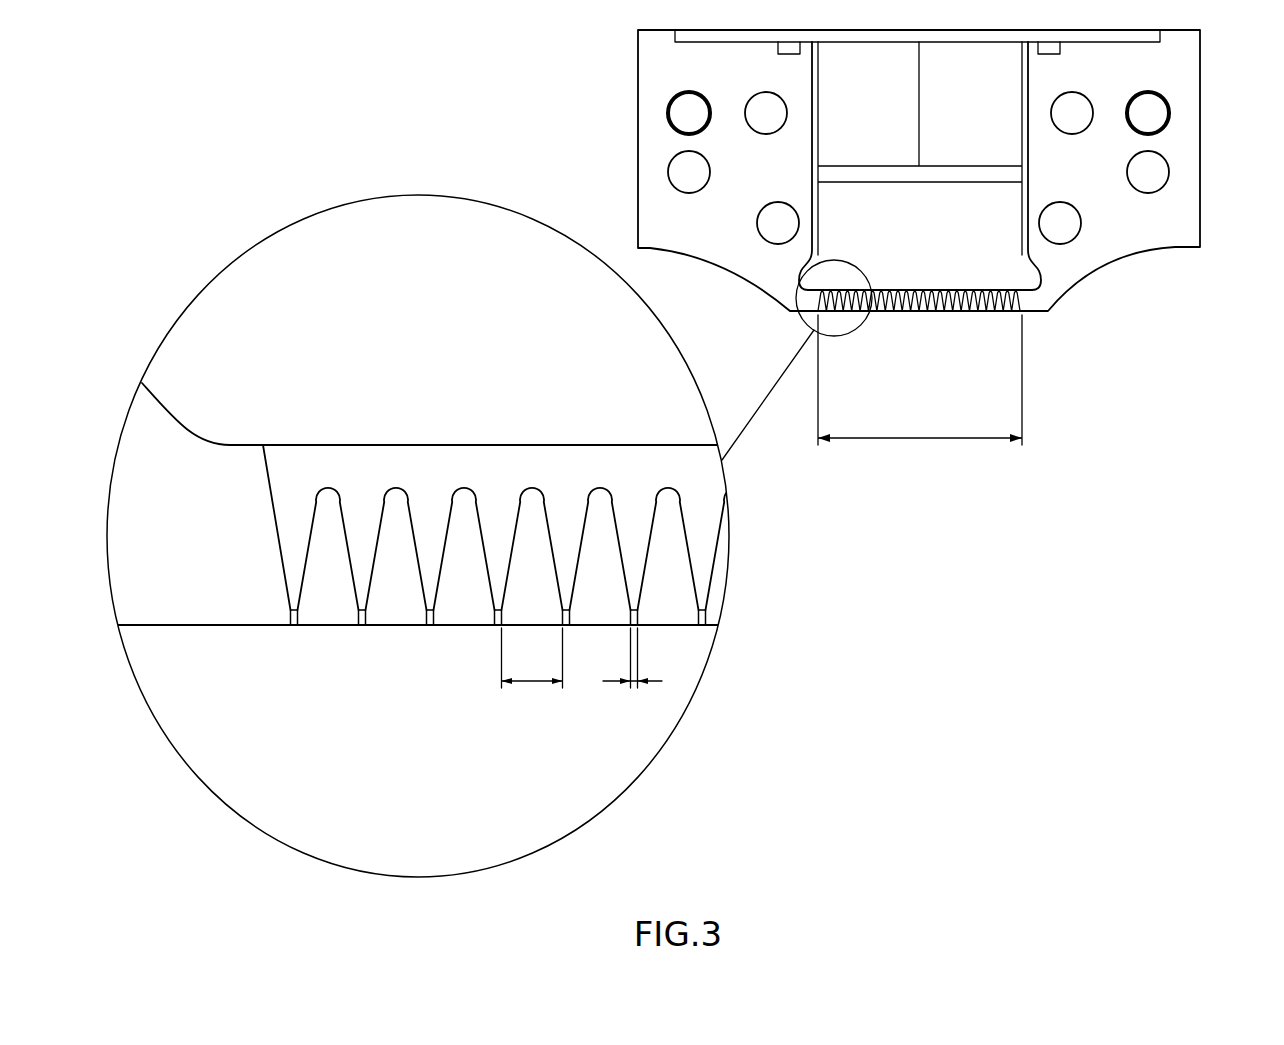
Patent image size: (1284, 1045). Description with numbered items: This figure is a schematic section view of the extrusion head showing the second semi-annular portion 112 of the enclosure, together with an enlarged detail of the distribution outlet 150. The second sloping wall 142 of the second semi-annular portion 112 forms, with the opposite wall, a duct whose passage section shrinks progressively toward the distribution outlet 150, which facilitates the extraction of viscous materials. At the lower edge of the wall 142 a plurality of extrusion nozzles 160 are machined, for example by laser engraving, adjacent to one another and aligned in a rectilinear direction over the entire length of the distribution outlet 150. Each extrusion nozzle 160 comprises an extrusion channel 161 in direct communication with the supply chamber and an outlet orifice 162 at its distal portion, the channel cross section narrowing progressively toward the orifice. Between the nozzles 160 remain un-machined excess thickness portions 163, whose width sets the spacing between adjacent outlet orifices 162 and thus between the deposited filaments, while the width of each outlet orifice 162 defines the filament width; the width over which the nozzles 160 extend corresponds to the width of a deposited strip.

The second semi-annular portion 112 is at (1200, 148).
The second sloping wall 142 is at (990, 210).
The distribution outlet 150 is at (941, 320).
The extrusion nozzle 160 is at (971, 287).
The extrusion channel 161 is at (293, 560).
The outlet orifice 162 is at (292, 627).
The excess thickness portion 163 is at (320, 607).